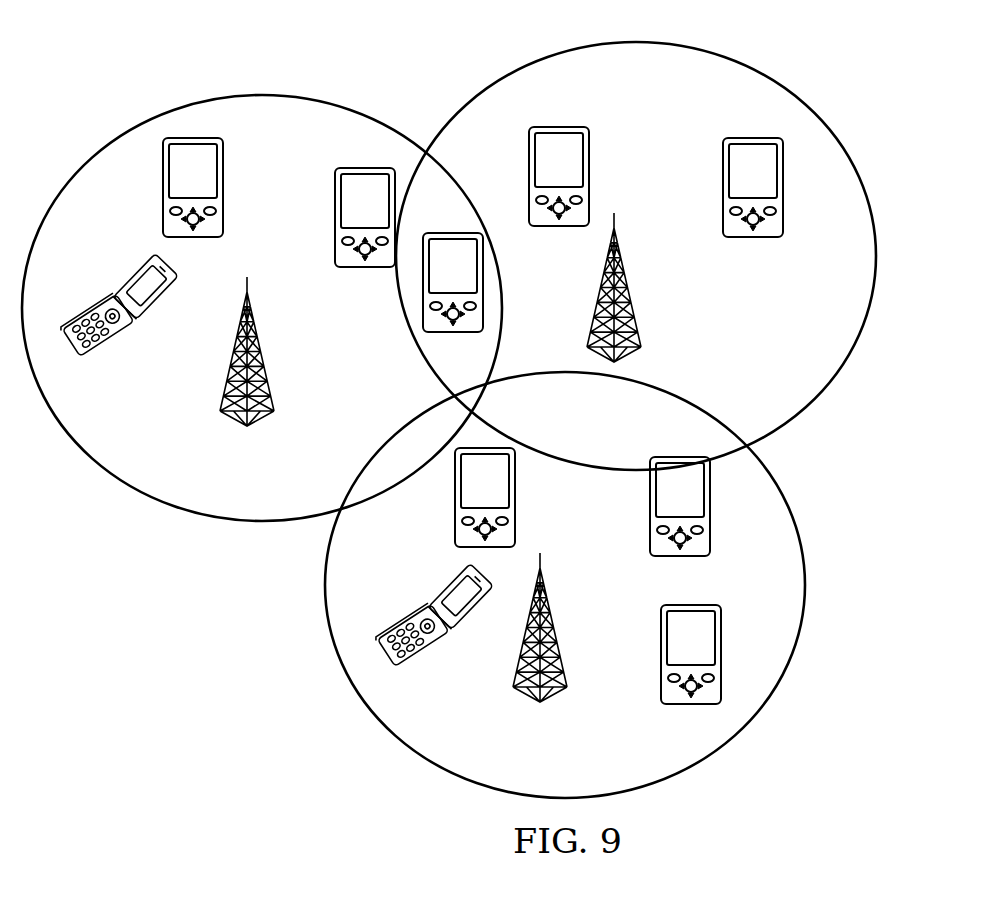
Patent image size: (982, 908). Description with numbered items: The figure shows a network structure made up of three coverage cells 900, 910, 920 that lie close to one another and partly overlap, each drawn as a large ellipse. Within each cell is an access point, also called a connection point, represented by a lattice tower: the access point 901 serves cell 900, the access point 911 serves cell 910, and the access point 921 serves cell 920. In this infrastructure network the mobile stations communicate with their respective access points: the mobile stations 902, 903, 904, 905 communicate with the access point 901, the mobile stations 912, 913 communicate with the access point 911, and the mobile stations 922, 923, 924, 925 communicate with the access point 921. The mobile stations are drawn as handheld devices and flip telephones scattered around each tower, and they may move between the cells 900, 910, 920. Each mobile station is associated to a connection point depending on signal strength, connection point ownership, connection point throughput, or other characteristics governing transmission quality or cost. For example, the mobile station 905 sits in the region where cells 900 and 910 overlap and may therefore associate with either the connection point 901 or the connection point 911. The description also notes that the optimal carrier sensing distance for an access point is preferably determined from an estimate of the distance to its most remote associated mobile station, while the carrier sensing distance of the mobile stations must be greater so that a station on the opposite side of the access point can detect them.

The coverage cell 900 is at (173, 104).
The access point 901 is at (230, 353).
The mobile station 902 is at (92, 312).
The mobile station 903 is at (222, 184).
The mobile station 904 is at (335, 215).
The mobile station 905 is at (441, 233).
The coverage cell 910 is at (706, 46).
The access point 911 is at (628, 292).
The mobile station 912 is at (753, 236).
The mobile station 913 is at (591, 173).
The coverage cell 920 is at (702, 773).
The access point 921 is at (556, 633).
The mobile station 922 is at (426, 648).
The mobile station 923 is at (516, 498).
The mobile station 924 is at (711, 507).
The mobile station 925 is at (661, 664).